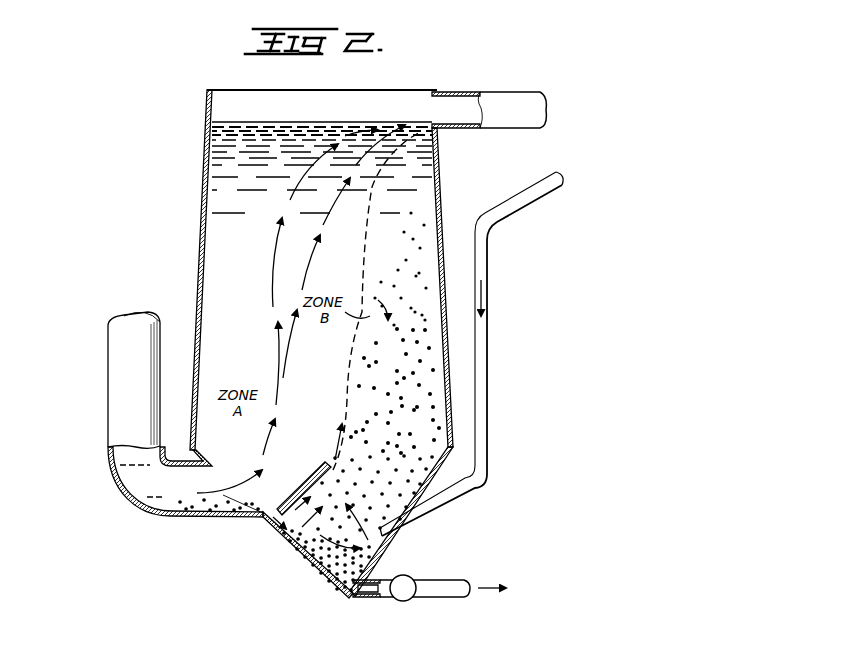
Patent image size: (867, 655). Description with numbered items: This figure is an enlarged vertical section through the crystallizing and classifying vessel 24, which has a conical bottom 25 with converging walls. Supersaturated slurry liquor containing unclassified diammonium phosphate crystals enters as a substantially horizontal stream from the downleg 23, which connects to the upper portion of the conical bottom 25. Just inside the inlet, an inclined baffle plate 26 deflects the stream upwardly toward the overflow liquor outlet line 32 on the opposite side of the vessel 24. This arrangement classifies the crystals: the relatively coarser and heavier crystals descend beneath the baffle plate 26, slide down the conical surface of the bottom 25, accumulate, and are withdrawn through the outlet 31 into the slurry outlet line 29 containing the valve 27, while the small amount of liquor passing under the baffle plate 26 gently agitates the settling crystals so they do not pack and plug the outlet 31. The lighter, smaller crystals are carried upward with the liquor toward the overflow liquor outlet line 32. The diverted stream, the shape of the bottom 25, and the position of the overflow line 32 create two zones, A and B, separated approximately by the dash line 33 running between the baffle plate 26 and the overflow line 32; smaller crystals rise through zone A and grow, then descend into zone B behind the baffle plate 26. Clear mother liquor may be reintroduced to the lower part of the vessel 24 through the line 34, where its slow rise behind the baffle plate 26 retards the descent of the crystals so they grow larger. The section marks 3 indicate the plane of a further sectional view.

The section line 3- 3 is at (108, 447).
The downleg 23 is at (120, 352).
The crystallizing and classifying vessel 24 is at (207, 198).
The conical bottom 25 is at (297, 538).
The baffle plate 26 is at (298, 482).
The valve 27 is at (403, 601).
The slurry outlet line 29 is at (445, 592).
The outlet 31 is at (366, 597).
The overflow liquor outlet line 32 is at (496, 102).
The dash line 33 is at (362, 268).
The line 34 is at (485, 343).